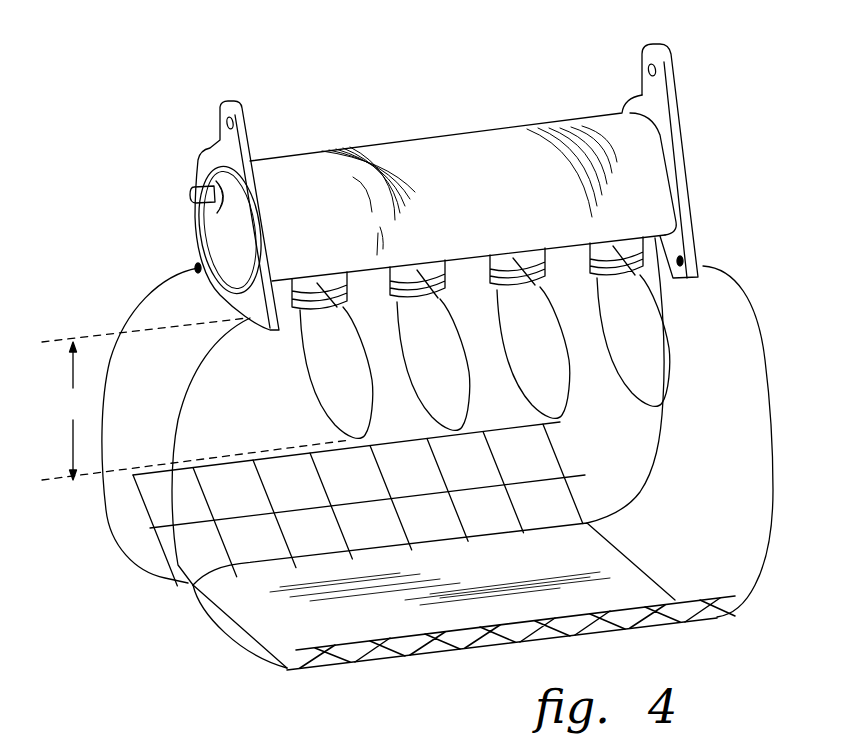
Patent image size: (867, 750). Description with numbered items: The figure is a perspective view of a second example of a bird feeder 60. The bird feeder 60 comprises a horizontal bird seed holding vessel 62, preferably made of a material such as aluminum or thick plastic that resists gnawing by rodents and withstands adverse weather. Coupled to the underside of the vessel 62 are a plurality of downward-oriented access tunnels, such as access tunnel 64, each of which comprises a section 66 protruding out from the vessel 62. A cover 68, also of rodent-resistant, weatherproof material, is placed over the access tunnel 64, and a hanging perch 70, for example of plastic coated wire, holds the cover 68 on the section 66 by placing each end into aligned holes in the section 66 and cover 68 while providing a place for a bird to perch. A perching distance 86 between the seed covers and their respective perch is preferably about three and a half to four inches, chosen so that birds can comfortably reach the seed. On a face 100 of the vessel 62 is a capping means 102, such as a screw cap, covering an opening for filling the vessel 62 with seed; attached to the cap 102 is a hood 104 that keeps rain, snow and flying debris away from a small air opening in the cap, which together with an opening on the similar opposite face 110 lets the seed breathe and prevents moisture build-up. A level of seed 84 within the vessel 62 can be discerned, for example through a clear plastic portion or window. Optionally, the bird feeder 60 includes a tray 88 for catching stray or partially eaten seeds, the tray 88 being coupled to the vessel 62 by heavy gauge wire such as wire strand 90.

The bird feeder 60 is at (118, 95).
The horizontal bird seed holding vessel 62 is at (465, 131).
The access tunnel 64 is at (581, 275).
The section 66 is at (487, 260).
The cover 68 is at (610, 277).
The hanging perch 70 is at (567, 413).
The level of seed 84 is at (467, 230).
The distance 86 is at (196, 399).
The tray 88 is at (427, 655).
The wire strand 90 is at (764, 558).
The face 100 is at (230, 210).
The capping means 102 is at (200, 213).
The hood 104 is at (200, 187).
The face 110 is at (696, 144).